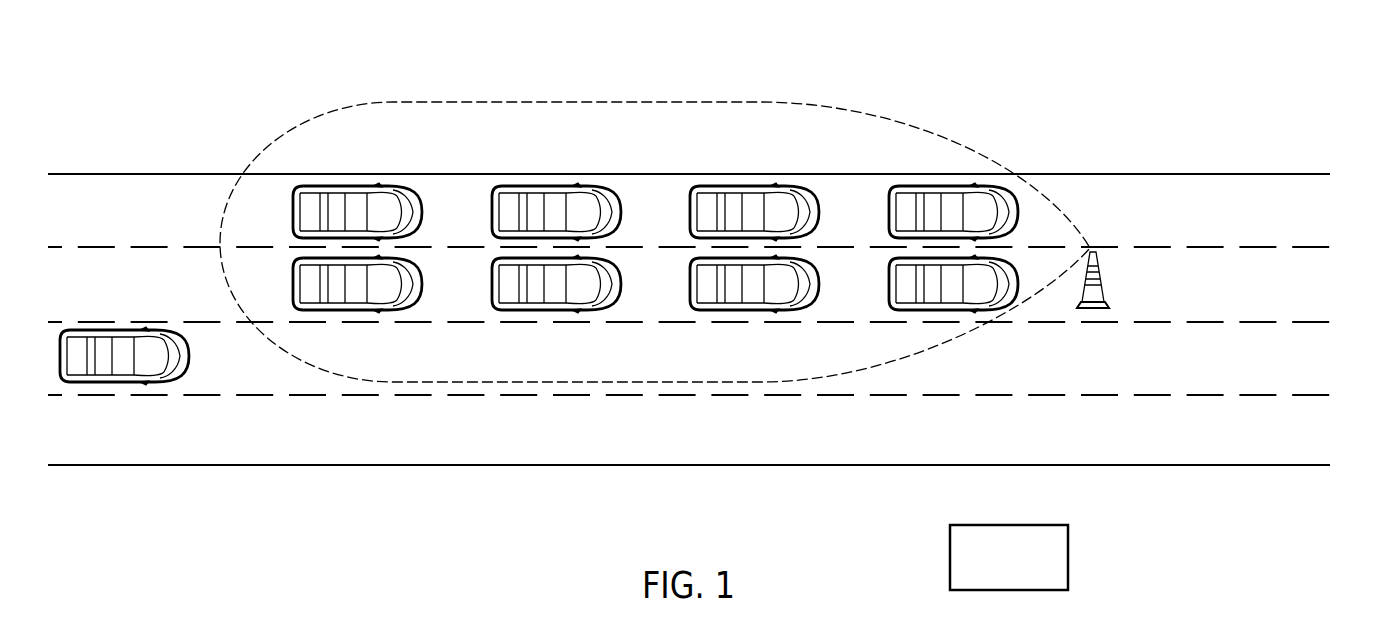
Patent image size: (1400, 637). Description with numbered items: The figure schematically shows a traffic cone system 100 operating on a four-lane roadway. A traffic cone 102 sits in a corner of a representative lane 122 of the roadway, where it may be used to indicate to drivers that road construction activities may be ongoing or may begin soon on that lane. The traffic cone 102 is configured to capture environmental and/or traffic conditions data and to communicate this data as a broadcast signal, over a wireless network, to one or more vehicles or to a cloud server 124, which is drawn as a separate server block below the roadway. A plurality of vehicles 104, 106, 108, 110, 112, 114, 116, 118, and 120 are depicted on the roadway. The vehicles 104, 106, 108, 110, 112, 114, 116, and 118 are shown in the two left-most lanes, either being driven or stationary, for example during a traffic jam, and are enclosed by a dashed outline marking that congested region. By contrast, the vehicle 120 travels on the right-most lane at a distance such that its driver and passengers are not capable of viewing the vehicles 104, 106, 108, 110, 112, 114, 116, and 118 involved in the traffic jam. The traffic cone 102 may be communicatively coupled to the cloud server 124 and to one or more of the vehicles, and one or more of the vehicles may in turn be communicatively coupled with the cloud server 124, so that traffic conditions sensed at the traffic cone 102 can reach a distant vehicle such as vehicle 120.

The traffic cone system 100 is at (163, 111).
The traffic cone 102 is at (1093, 252).
The vehicle 104 is at (910, 310).
The vehicle 106 is at (745, 310).
The vehicle 108 is at (548, 310).
The vehicle 110 is at (377, 310).
The vehicle 112 is at (350, 188).
The vehicle 114 is at (548, 188).
The vehicle 116 is at (748, 188).
The vehicle 118 is at (918, 187).
The vehicle 120 is at (113, 330).
The lane 122 is at (1320, 357).
The cloud server 124 is at (950, 558).